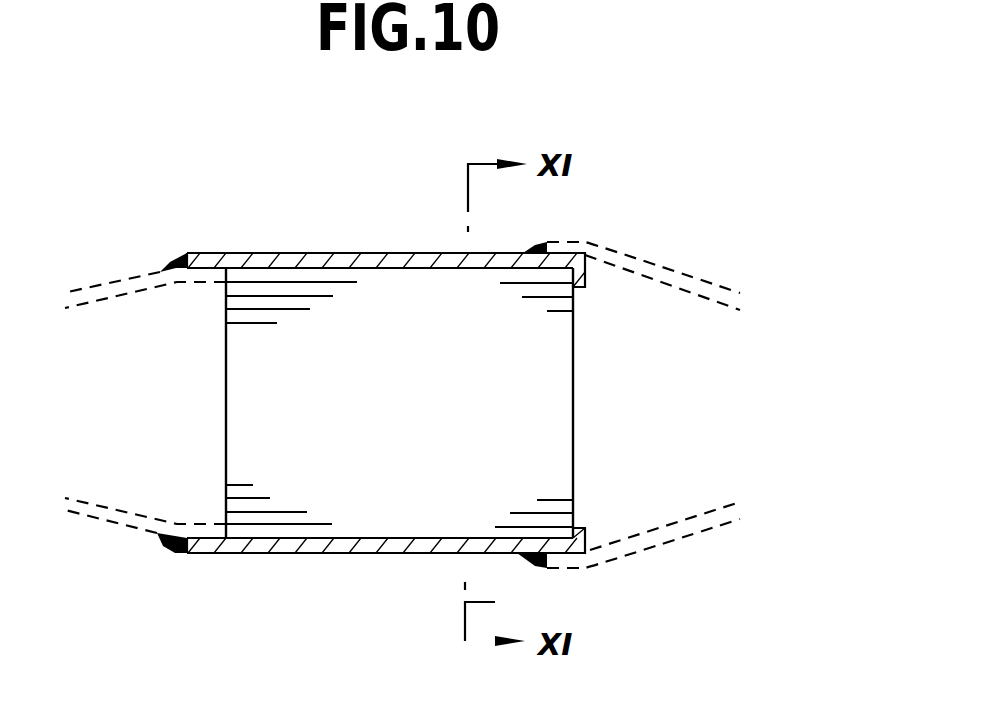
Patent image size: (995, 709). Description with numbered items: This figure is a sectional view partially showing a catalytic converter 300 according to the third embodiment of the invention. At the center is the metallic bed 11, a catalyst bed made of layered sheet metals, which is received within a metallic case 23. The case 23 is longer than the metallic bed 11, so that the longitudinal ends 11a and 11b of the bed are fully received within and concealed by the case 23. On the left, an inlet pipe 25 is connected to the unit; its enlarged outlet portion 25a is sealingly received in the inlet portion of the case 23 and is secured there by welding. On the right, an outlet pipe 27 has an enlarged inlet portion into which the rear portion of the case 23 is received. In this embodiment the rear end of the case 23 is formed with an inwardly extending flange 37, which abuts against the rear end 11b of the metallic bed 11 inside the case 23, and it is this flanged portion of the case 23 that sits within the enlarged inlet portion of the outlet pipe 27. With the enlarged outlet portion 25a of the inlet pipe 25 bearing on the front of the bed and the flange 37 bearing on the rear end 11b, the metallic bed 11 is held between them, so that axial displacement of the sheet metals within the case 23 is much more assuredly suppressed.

The catalytic converter 300 is at (684, 130).
The metallic bed 11 is at (385, 488).
The longitudinal end of metallic bed 11a is at (226, 383).
The rear end of metallic bed 11b is at (573, 398).
The metallic case 23 is at (349, 252).
The inlet pipe 25 is at (117, 523).
The enlarged outlet portion of inlet pipe 25a is at (226, 432).
The outlet pipe 27 is at (640, 548).
The inwardly extending flange 37 is at (585, 533).